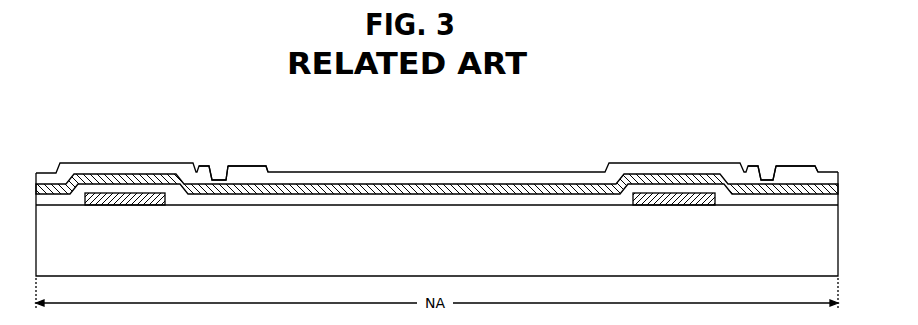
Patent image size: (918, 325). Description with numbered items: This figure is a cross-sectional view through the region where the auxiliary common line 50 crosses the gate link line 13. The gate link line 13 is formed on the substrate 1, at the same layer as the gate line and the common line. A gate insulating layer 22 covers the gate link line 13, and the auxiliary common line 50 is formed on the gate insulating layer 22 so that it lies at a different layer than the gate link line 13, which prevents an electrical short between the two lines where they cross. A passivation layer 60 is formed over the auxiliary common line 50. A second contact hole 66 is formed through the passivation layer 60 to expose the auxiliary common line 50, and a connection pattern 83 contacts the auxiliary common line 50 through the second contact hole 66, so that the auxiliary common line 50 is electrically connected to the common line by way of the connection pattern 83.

The substrate 1 is at (827, 267).
The gate link line 13 is at (124, 206).
The gate insulating layer 22 is at (373, 200).
The auxiliary common line 50 is at (416, 184).
The passivation layer 60 is at (307, 178).
The second contact hole 66 is at (221, 155).
The connection pattern 83 is at (256, 166).